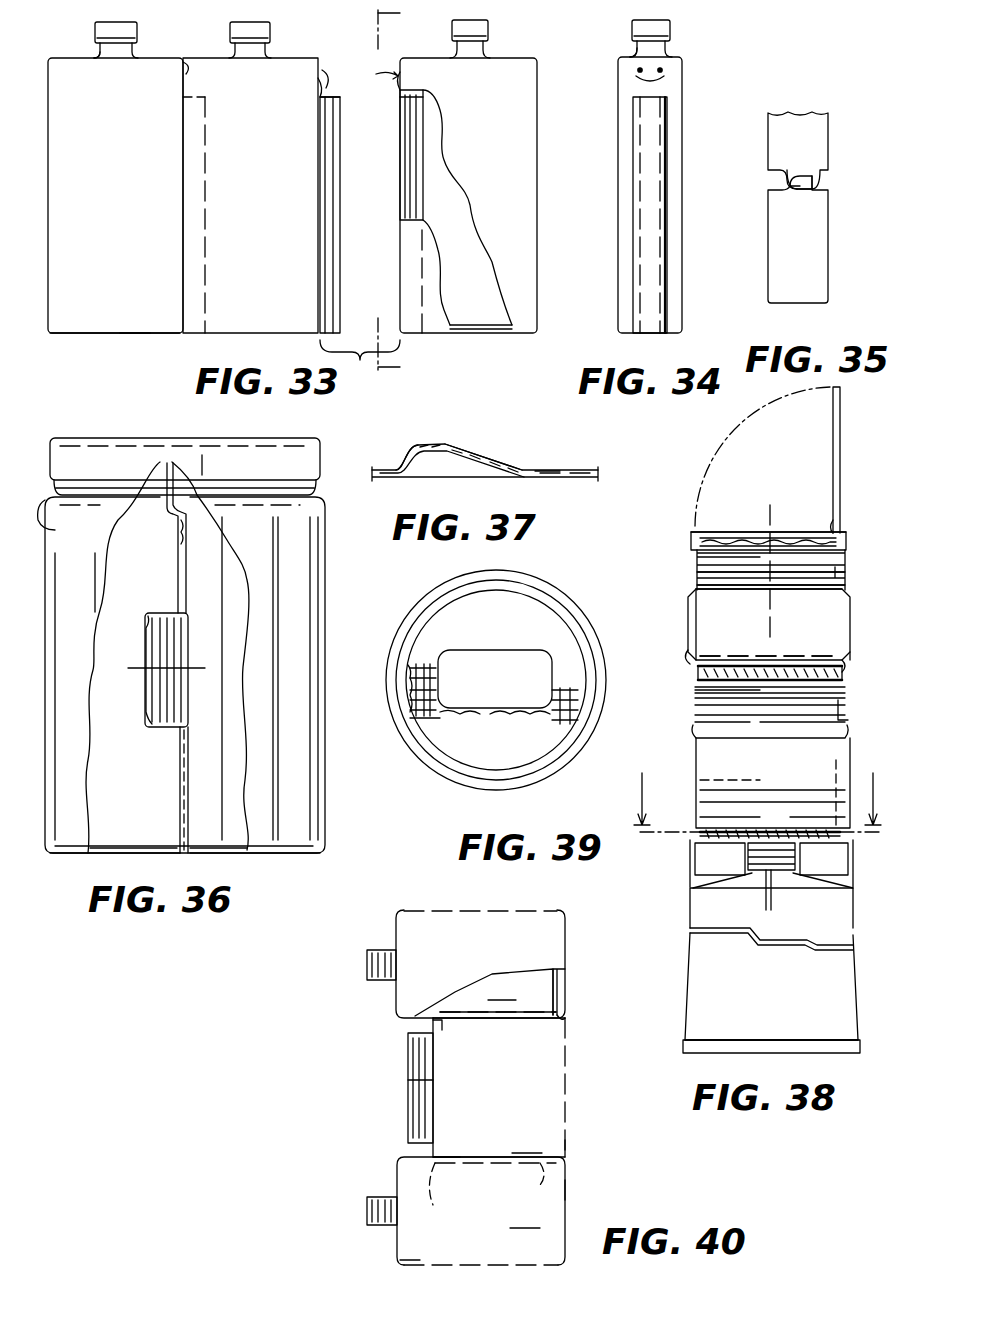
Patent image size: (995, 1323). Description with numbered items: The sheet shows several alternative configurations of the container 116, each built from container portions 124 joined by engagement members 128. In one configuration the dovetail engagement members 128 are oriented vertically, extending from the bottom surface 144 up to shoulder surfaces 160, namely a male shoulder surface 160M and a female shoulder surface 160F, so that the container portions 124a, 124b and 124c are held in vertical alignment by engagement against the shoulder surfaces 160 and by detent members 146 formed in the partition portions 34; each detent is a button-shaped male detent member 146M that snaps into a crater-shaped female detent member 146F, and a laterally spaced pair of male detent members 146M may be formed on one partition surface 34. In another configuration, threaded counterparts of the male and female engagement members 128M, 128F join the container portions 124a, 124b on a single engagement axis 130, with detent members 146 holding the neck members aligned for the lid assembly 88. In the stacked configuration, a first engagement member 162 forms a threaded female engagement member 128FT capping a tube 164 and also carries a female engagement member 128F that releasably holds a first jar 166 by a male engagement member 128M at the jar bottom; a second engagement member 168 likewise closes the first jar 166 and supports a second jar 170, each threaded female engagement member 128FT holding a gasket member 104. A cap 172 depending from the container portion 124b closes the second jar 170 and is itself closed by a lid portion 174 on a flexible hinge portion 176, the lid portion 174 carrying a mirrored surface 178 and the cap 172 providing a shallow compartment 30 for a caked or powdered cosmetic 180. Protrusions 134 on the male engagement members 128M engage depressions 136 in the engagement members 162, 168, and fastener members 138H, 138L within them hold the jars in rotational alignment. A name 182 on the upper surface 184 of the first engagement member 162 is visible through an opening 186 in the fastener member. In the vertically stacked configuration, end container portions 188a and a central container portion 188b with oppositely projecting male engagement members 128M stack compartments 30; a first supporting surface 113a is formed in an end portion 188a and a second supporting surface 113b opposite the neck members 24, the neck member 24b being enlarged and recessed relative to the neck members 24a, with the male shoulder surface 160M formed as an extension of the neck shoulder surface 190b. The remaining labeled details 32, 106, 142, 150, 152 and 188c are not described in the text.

In FIG. 33, the neck member 24 is at (96, 54).
In FIG. 34, the neck member 24 is at (672, 56).
In FIG. 40, the neck member 24a is at (368, 1210).
In FIG. 40, the neck member 24b is at (406, 1112).
In FIG. 38, the compartment 30 is at (800, 632).
In FIG. 40, the compartment 30 is at (515, 1105).
In FIG. 36, the base strip 32 is at (190, 816).
In FIG. 37, the base strip 32 is at (585, 470).
In FIG. 33, the partition portion 34 is at (374, 193).
In FIG. 34, the partition portion 34 is at (622, 87).
In FIG. 36, the partition portion 34 is at (190, 806).
In FIG. 37, the partition portion 34 is at (585, 478).
In FIG. 36, the lid assembly 88 is at (121, 433).
In FIG. 38, the gasket member 104 is at (760, 880).
In FIG. 33, the cap 106 is at (137, 26).
In FIG. 34, the cap 106 is at (634, 24).
In FIG. 40, the first supporting surface 113a is at (400, 1264).
In FIG. 40, the second supporting surface 113b is at (567, 1132).
In FIG. 33, the container 116 is at (70, 334).
In FIG. 36, the container 116 is at (284, 856).
In FIG. 40, the container 116 is at (566, 1196).
In FIG. 34, the container portion 124 is at (618, 154).
In FIG. 33, the container portion 124a is at (128, 219).
In FIG. 36, the container portion 124a is at (90, 856).
In FIG. 38, the container portion 124a is at (690, 952).
In FIG. 33, the container portion 124b is at (450, 334).
In FIG. 35, the container portion 124b is at (812, 292).
In FIG. 36, the container portion 124b is at (300, 856).
In FIG. 38, the container portion 124b is at (691, 548).
In FIG. 33, the container portion 124c is at (258, 211).
In FIG. 35, the container portion 124c is at (768, 128).
In FIG. 38, the container portion 124c is at (696, 790).
In FIG. 33, the engagement member 128 is at (211, 254).
In FIG. 33, the female engagement member 128F is at (416, 182).
In FIG. 35, the female engagement member 128F is at (797, 186).
In FIG. 36, the female engagement member 128F is at (146, 652).
In FIG. 39, the female engagement member 128F is at (412, 668).
In FIG. 38, the female engagement member 128F is at (698, 806).
In FIG. 40, the female engagement member 128F is at (520, 1018).
In FIG. 33, the male engagement member 128M is at (340, 160).
In FIG. 34, the male engagement member 128M is at (648, 252).
In FIG. 35, the male engagement member 128M is at (797, 192).
In FIG. 36, the male engagement member 128M is at (172, 724).
In FIG. 38, the male engagement member 128M is at (690, 840).
In FIG. 40, the male engagement member 128M is at (564, 998).
In FIG. 38, the threaded female engagement member 128FT is at (700, 888).
In FIG. 36, the engagement axis 130 is at (198, 664).
In FIG. 38, the engagement axis 130 is at (772, 520).
In FIG. 34, the protrusion 134 is at (628, 198).
In FIG. 35, the protrusion 134 is at (784, 188).
In FIG. 38, the protrusion 134 is at (806, 800).
In FIG. 35, the depression 136 is at (790, 190).
In FIG. 38, the depression 136 is at (842, 838).
In FIG. 38, the fastener member 138H is at (762, 820).
In FIG. 39, the fastener member 138L is at (505, 629).
In FIG. 38, the fastener member 138L is at (794, 852).
In FIG. 36, the rail edge 142 is at (164, 730).
In FIG. 38, the rail edge 142 is at (764, 906).
In FIG. 33, the bottom surface 144 is at (118, 334).
In FIG. 33, the detent member 146 is at (202, 62).
In FIG. 40, the detent member 146 is at (538, 1172).
In FIG. 33, the female detent member 146F is at (396, 74).
In FIG. 36, the female detent member 146F is at (168, 560).
In FIG. 37, the female detent member 146F is at (448, 430).
In FIG. 33, the male detent member 146M is at (332, 70).
In FIG. 34, the male detent member 146M is at (666, 82).
In FIG. 36, the male detent member 146M is at (186, 560).
In FIG. 37, the male detent member 146M is at (450, 472).
In FIG. 40, the male detent member 146M is at (562, 1020).
In FIG. 37, the ramp 150 is at (462, 451).
In FIG. 37, the shoulder 152 is at (402, 462).
In FIG. 33, the shoulder surface 160 is at (210, 98).
In FIG. 40, the shoulder surface 160 is at (434, 1190).
In FIG. 33, the female shoulder surface 160F is at (402, 110).
In FIG. 40, the female shoulder surface 160F is at (438, 1022).
In FIG. 33, the male shoulder surface 160M is at (336, 97).
In FIG. 40, the male shoulder surface 160M is at (428, 1022).
In FIG. 39, the first engagement member 162 is at (452, 784).
In FIG. 38, the first engagement member 162 is at (690, 838).
In FIG. 38, the tube 164 is at (688, 982).
In FIG. 38, the first jar 166 is at (750, 769).
In FIG. 38, the second engagement member 168 is at (692, 692).
In FIG. 38, the second jar 170 is at (748, 633).
In FIG. 38, the cap 172 is at (694, 574).
In FIG. 38, the lid portion 174 is at (840, 468).
In FIG. 38, the flexible hinge portion 176 is at (840, 526).
In FIG. 38, the mirrored surface 178 is at (833, 462).
In FIG. 38, the caked or powdered cosmetic 180 is at (740, 540).
In FIG. 39, the name 182 is at (458, 716).
In FIG. 39, the upper surface 184 is at (516, 656).
In FIG. 38, the upper surface 184 is at (758, 850).
In FIG. 39, the opening 186 is at (510, 716).
In FIG. 40, the end container portion 188a is at (488, 1261).
In FIG. 40, the central container portion 188b is at (503, 1133).
In FIG. 40, the third box container 188c is at (500, 961).
In FIG. 40, the neck shoulder surface 190b is at (406, 1080).